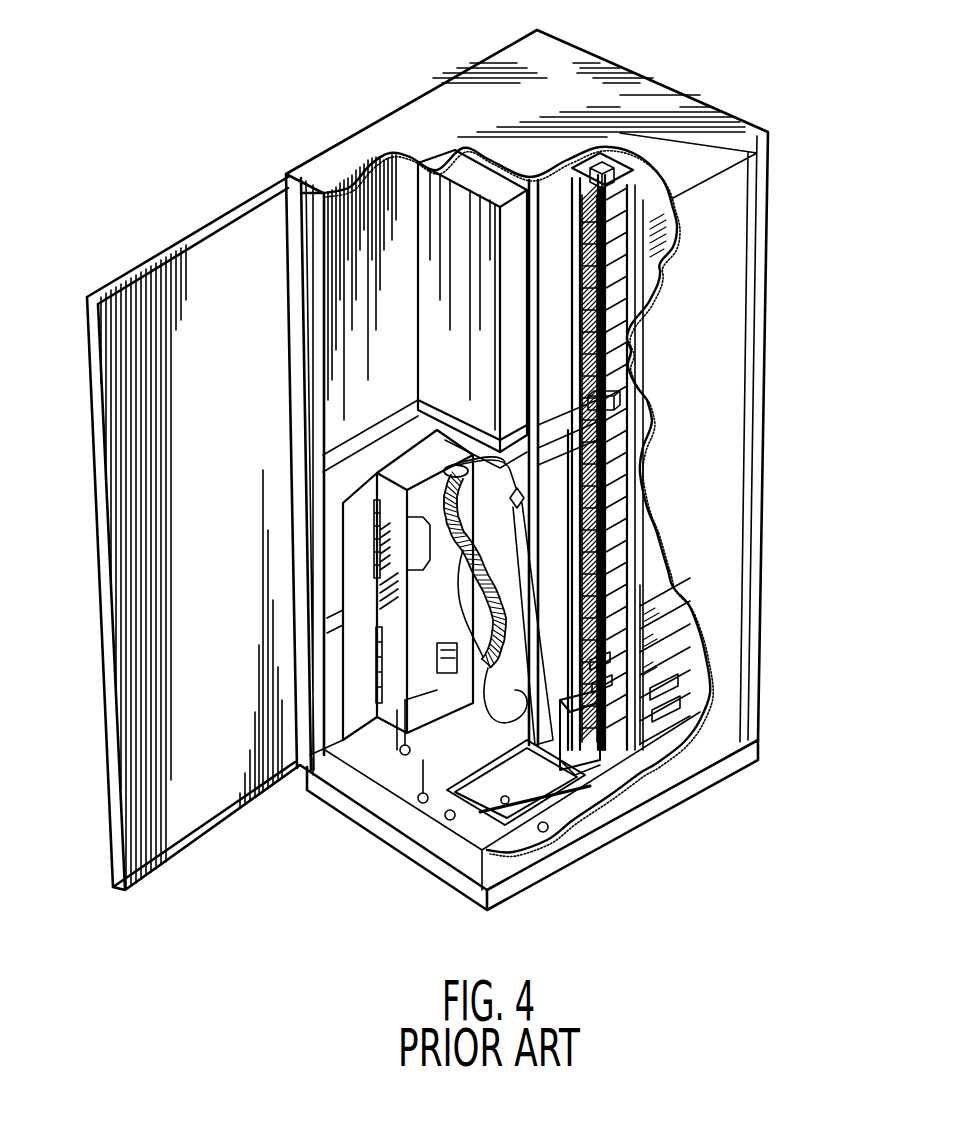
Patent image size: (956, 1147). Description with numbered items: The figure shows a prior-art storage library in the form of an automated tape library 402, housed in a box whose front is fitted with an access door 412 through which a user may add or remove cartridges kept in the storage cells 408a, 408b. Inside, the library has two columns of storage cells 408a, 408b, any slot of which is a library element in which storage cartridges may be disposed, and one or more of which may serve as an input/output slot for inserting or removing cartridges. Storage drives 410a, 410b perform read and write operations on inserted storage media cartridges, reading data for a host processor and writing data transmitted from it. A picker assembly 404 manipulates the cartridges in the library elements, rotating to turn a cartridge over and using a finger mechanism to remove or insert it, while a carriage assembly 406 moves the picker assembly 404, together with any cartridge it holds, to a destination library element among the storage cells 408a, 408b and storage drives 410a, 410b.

The automated tape library 402 is at (240, 153).
The access door 412 is at (163, 335).
The carriage assembly 406 is at (614, 304).
The picker assembly 404 is at (618, 401).
The storage cell 408a is at (616, 553).
The storage cell 408b is at (680, 633).
The storage drive 410a is at (614, 663).
The storage drive 410b is at (686, 696).